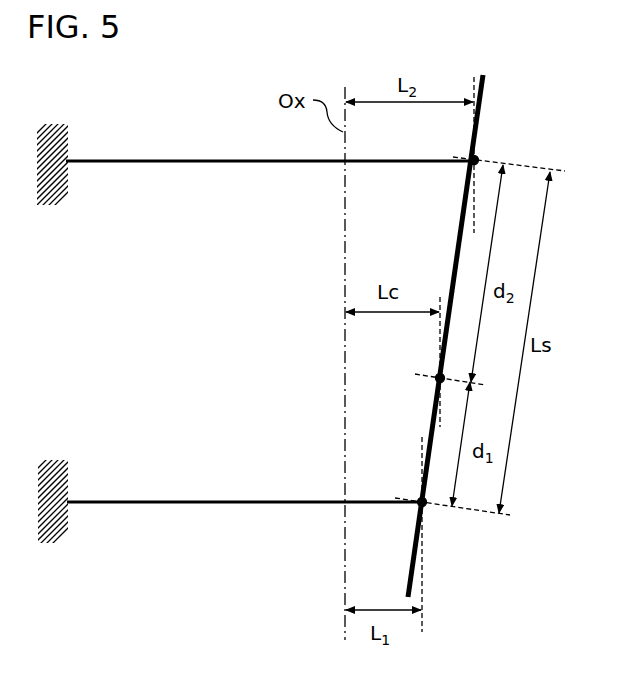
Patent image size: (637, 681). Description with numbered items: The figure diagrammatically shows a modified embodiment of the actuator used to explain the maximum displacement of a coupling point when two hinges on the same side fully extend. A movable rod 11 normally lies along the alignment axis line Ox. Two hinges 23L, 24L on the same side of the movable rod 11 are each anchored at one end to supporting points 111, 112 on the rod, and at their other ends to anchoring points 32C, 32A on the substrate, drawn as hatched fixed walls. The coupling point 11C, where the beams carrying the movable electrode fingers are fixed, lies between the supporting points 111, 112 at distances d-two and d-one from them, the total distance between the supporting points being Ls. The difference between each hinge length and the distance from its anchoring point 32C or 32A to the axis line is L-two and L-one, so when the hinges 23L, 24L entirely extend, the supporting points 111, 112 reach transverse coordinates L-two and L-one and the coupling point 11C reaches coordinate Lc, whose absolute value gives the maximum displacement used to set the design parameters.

The movable rod 11 is at (482, 103).
The supporting point 111 is at (480, 155).
The coupling point 11C is at (437, 381).
The supporting point 112 is at (425, 505).
The hinge 23L is at (172, 163).
The hinge 24L is at (240, 502).
The anchoring point 32C is at (68, 161).
The anchoring point 32A is at (69, 503).